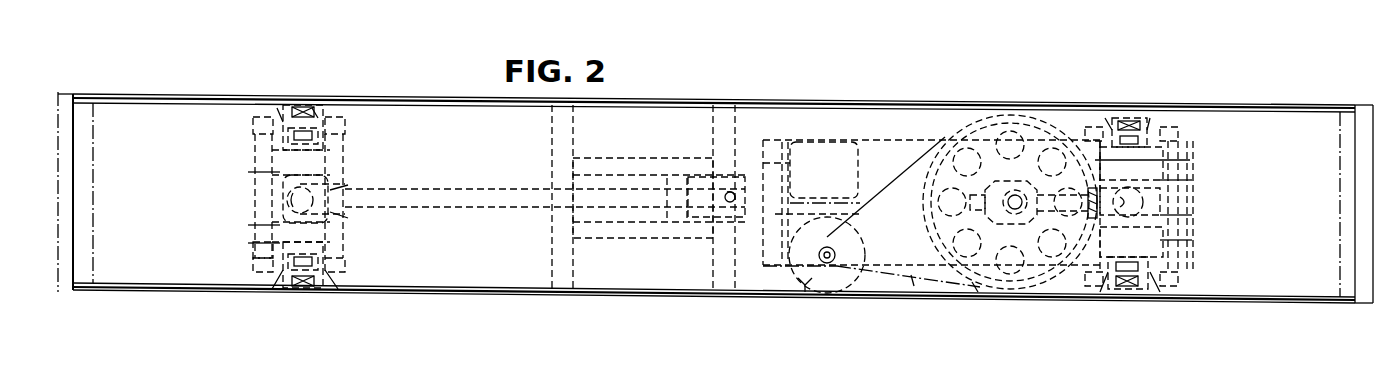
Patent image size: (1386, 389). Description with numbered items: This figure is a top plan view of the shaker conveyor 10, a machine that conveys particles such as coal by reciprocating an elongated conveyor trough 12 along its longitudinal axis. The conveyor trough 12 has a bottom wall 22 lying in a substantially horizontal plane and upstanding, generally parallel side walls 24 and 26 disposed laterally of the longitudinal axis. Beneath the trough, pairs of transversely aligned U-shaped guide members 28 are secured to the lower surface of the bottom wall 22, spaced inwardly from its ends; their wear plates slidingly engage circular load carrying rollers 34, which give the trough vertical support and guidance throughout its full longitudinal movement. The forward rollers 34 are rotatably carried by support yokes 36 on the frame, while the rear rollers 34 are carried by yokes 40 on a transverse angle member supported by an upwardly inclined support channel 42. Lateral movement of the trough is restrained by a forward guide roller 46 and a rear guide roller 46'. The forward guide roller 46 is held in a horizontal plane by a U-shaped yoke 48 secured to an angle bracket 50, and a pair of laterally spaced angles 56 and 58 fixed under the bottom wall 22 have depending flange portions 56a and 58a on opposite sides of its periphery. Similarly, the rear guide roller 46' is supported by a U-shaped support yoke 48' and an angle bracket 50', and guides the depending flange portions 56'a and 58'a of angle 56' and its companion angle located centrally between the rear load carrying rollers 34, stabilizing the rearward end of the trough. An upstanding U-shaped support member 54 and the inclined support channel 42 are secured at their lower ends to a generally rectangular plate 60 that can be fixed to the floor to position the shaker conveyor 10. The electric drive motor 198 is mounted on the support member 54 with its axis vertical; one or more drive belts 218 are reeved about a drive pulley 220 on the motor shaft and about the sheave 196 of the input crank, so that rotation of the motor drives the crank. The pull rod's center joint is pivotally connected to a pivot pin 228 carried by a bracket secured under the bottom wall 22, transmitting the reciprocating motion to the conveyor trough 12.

The shaker conveyor 10 is at (626, 318).
The conveyor trough 12 is at (461, 300).
The bottom wall 22 is at (533, 292).
The side wall 24 is at (690, 294).
The side wall 26 is at (690, 102).
The U-shaped guide member 28 is at (346, 122).
The load carrying roller 34 is at (280, 112).
The support yoke 36 is at (310, 112).
The yoke 40 is at (1128, 120).
The upwardly inclined support channel 42 is at (1193, 270).
The forward guide roller 46 is at (263, 196).
The rear guide roller 46' is at (1185, 200).
The U-shaped yoke 48 is at (370, 196).
The U-shaped support yoke 48' is at (1215, 206).
The angle bracket 50 is at (545, 176).
The angle bracket 50' is at (1060, 269).
The upstanding U-shaped support member 54 is at (792, 178).
The angle 56 is at (252, 187).
The depending flange portion 56a is at (266, 171).
The angle 56' is at (1182, 155).
The depending flange portion 56'a is at (1221, 167).
The angle 58 is at (725, 210).
The depending flange portion 58a is at (265, 212).
The depending flange portion 58'a is at (1223, 244).
The rectangular plate 60 is at (828, 137).
The sheave 196 is at (977, 300).
The electric drive motor 198 is at (818, 300).
The drive belt 218 is at (912, 300).
The drive pulley 220 is at (802, 300).
The pivot pin 228 is at (740, 172).